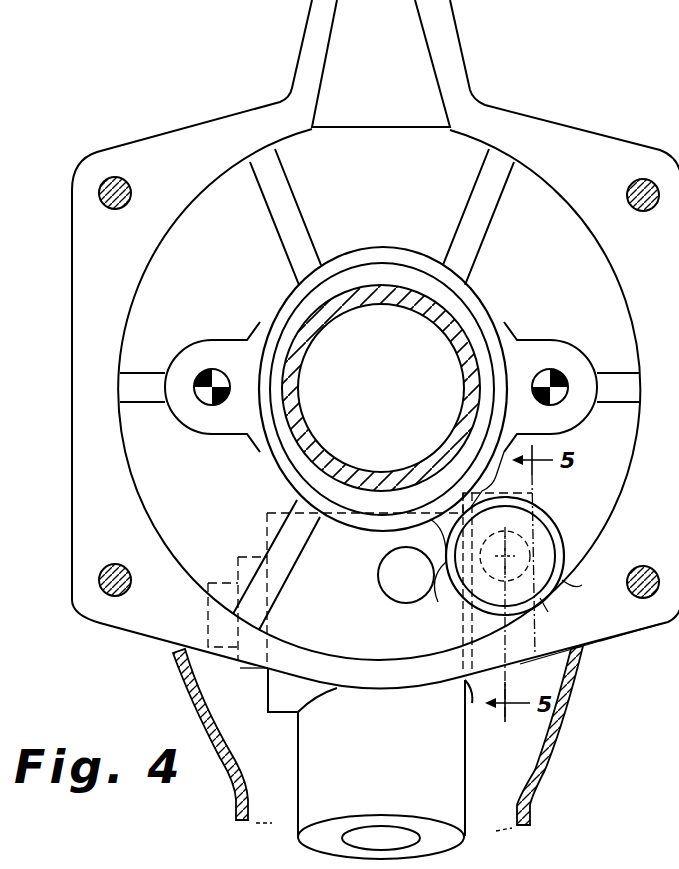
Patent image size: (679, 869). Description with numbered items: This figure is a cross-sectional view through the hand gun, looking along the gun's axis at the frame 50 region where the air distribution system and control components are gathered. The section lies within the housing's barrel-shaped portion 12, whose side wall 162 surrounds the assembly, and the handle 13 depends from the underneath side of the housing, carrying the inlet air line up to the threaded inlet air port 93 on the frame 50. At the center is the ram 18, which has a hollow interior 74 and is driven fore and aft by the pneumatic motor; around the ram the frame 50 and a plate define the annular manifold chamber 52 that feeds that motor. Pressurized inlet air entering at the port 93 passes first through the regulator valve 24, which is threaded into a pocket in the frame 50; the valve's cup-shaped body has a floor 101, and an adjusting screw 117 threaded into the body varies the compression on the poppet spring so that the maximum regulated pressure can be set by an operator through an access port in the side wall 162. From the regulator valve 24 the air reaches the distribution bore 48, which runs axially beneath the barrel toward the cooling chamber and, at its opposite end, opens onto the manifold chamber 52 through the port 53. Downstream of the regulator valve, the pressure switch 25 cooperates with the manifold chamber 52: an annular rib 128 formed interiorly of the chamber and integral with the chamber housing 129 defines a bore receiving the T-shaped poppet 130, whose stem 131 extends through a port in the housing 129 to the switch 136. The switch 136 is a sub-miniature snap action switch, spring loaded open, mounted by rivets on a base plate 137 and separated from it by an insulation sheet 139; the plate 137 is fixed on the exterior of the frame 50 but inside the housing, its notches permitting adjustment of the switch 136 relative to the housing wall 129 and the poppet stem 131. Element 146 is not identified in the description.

The barrel-shaped portion 12 is at (600, 668).
The handle 13 is at (532, 820).
The ram 18 is at (458, 337).
The regulator valve 24 is at (212, 674).
The pressure switch 25 is at (590, 509).
The distribution bore 48 is at (379, 568).
The frame 50 is at (297, 698).
The manifold chamber 52 is at (588, 260).
The port 53 is at (390, 594).
The hollow interior 74 is at (312, 421).
The inlet air port 93 is at (392, 838).
The floor 101 is at (250, 673).
The adjusting screw 117 is at (200, 628).
The annular rib 128 is at (556, 506).
The chamber housing 129 is at (587, 593).
The poppet 130 is at (553, 555).
The stem 131 is at (549, 606).
The switch 136 is at (578, 678).
The base plate 137 is at (465, 703).
The insulation sheet 139 is at (490, 648).
The passage opening 146 is at (505, 545).
The side wall 162 is at (170, 655).